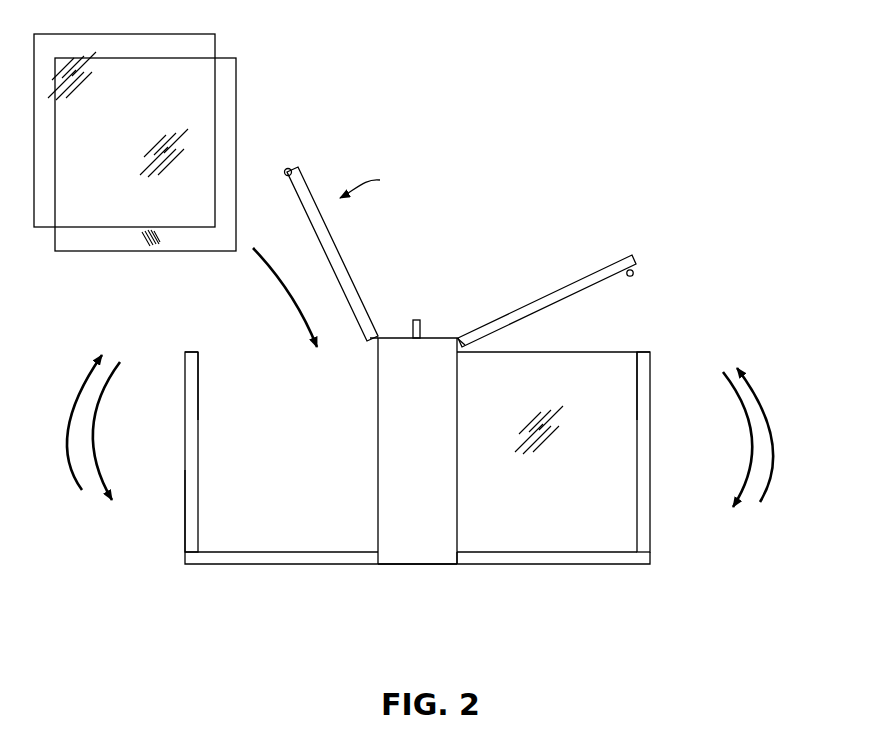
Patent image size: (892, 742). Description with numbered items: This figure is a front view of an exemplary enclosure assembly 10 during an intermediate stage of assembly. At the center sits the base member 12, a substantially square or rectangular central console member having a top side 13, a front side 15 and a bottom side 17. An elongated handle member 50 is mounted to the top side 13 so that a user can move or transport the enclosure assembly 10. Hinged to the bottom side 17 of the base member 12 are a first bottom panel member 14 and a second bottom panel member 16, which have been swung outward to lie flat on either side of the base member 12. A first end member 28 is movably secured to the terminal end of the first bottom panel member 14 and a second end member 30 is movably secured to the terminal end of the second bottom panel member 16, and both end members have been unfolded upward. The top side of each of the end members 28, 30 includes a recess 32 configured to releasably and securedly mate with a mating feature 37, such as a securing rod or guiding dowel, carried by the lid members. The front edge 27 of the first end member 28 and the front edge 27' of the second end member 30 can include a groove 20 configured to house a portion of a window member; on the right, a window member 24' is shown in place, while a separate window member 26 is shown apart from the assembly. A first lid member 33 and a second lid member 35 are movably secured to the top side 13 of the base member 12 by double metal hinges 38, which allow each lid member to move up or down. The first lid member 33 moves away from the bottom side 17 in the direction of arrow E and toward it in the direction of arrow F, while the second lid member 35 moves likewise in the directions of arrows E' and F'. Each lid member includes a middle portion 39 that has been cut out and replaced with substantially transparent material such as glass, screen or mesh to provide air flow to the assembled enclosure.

The enclosure assembly 10 is at (104, 26).
The base member 12 is at (425, 600).
The top side 13 is at (425, 338).
The first bottom panel member 14 is at (303, 558).
The front side 15 is at (445, 553).
The second bottom panel member 16 is at (595, 558).
The bottom side 17 is at (405, 565).
The groove 20 is at (200, 448).
The window member 24' is at (580, 446).
The window member 26 is at (225, 107).
The front edge 27 is at (238, 386).
The front edge 27' is at (678, 386).
The first end member 28 is at (183, 488).
The second end member 30 is at (645, 473).
The recess 32 is at (191, 348).
The first lid member 33 is at (312, 180).
The second lid member 35 is at (588, 282).
The mating feature 37 is at (287, 169).
The double metal hinge 38 is at (375, 322).
The middle portion 39 is at (377, 185).
The handle member 50 is at (418, 320).
The arrow E is at (63, 422).
The arrow F is at (119, 431).
The arrow E' is at (773, 435).
The arrow F' is at (731, 439).